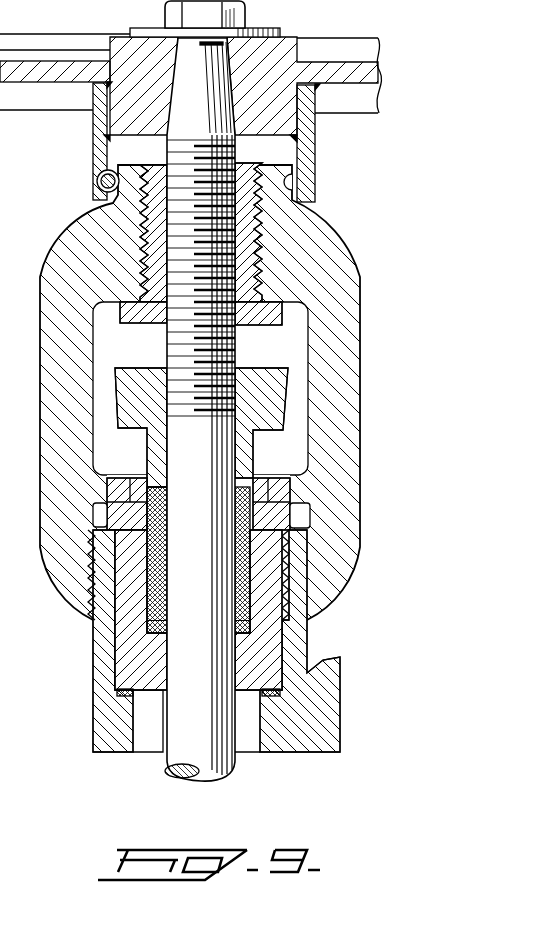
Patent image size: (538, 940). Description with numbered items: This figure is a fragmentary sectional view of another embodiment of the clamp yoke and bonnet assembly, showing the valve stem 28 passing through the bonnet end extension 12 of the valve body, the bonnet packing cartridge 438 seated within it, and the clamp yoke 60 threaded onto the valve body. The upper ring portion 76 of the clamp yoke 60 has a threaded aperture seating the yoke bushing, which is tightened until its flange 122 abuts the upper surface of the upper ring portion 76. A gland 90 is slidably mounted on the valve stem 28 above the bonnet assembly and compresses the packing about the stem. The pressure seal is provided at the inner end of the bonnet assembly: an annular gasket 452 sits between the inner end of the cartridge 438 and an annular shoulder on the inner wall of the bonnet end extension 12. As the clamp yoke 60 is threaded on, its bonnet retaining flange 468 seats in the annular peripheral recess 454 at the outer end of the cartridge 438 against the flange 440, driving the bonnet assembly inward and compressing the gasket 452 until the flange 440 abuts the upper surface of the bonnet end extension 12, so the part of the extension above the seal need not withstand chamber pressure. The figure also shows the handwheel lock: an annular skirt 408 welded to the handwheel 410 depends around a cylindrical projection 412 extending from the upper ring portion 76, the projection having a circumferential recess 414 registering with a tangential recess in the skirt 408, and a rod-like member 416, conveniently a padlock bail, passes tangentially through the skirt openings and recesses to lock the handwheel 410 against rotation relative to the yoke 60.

The clamp yoke 60 is at (217, 418).
The upper ring portion 76 is at (82, 222).
The valve stem 28 is at (209, 578).
The bonnet end extension 12 is at (97, 650).
The gland 90 is at (133, 368).
The flange 122 is at (265, 316).
The annular skirt 408 is at (93, 130).
The handwheel 410 is at (352, 84).
The cylindrical projection 412 is at (272, 167).
The circumferential recess 414 is at (283, 182).
The rod-like member 416 is at (111, 170).
The bonnet packing cartridge 438 is at (131, 627).
The flange 440 is at (284, 518).
The annular gasket 452 is at (118, 692).
The annular peripheral recess 454 is at (268, 492).
The bonnet retaining flange 468 is at (115, 482).